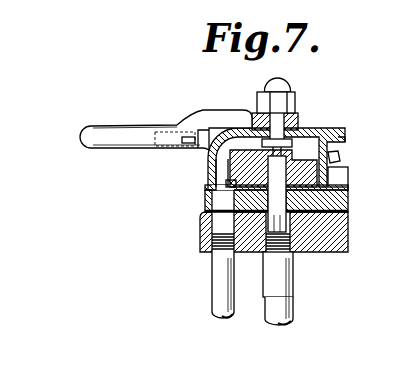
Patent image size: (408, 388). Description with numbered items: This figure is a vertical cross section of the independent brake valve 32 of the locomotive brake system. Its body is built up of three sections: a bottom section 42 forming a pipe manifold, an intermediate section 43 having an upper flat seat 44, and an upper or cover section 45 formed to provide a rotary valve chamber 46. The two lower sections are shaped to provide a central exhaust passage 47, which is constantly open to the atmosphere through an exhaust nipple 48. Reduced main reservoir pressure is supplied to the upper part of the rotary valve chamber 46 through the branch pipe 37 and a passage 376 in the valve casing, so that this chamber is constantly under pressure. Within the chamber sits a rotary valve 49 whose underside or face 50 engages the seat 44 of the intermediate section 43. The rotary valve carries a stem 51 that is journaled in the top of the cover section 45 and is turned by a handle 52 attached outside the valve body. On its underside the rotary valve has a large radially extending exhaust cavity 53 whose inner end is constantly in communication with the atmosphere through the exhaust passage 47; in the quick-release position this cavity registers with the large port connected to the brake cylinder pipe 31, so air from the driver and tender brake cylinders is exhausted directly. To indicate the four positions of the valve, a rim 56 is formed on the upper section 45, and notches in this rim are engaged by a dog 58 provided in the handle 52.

The brake cylinder pipe 31 is at (294, 312).
The independent brake valve 32 is at (340, 120).
The branch pipe 37 is at (221, 291).
The bore of pin housing 376 is at (220, 173).
The bottom section 42 is at (350, 233).
The intermediate section 43 is at (348, 203).
The upper flat seat 44 is at (235, 186).
The cover section 45 is at (340, 154).
The rotary valve chamber 46 is at (307, 146).
The central exhaust passage 47 is at (282, 222).
The exhaust nipple 48 is at (278, 274).
The rotary valve 49 is at (348, 169).
The face 50 is at (348, 187).
The stem 51 is at (293, 91).
The handle 52 is at (166, 130).
The large exhaust cavity 53 is at (275, 172).
The rim 56 is at (341, 136).
The dog 58 is at (206, 128).